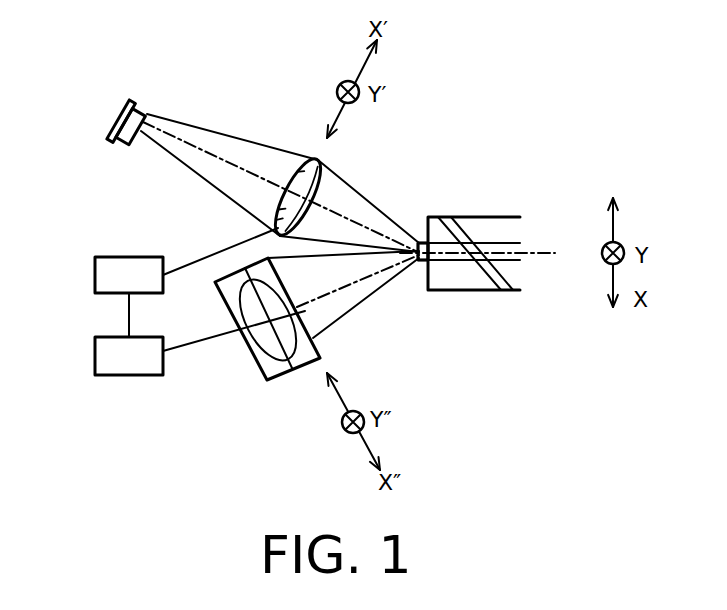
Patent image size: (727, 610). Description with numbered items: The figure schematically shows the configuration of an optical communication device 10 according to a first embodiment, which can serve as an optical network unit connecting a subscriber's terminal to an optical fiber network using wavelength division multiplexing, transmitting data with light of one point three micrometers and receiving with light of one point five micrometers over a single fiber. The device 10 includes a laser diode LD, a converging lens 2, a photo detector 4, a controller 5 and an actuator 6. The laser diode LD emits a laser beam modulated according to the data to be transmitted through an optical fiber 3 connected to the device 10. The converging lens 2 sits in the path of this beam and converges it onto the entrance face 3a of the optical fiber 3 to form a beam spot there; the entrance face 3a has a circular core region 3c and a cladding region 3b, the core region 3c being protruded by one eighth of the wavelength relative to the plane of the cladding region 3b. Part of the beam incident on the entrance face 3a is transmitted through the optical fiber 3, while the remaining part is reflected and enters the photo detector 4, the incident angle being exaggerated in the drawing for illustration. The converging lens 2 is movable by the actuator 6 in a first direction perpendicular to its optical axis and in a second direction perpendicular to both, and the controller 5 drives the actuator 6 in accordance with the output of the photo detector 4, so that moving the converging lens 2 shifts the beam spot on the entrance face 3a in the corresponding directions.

The laser diode LD is at (133, 105).
The optical communication device 10 is at (281, 100).
The converging lens 2 is at (320, 158).
The optical fiber 3 is at (482, 282).
The entrance face 3a is at (424, 242).
The cladding region 3b is at (423, 251).
The core region 3c is at (423, 251).
The photo detector 4 is at (271, 367).
The controller 5 is at (95, 354).
The actuator 6 is at (95, 274).